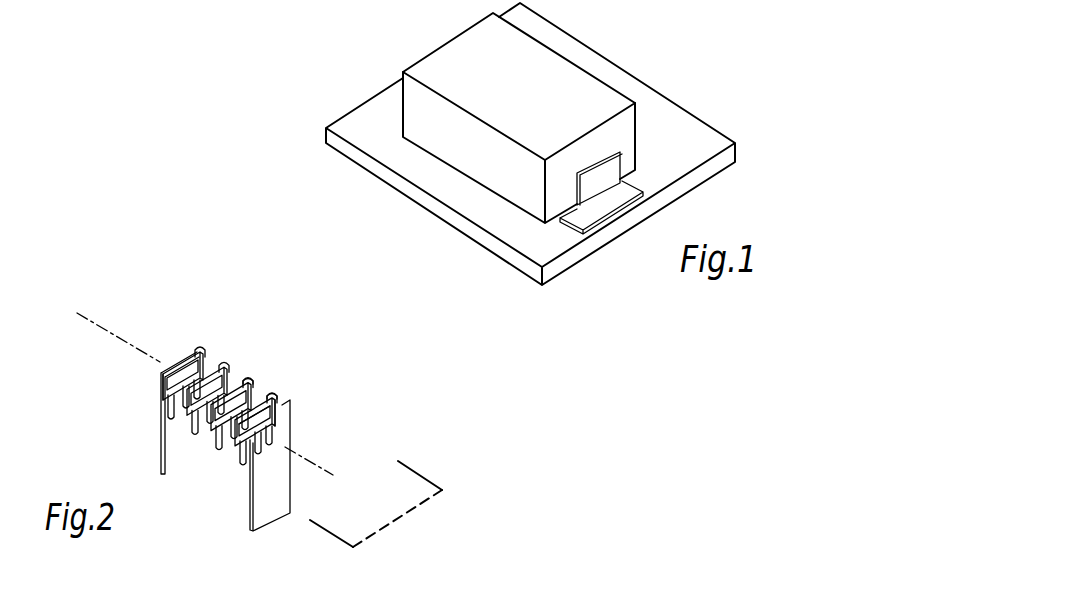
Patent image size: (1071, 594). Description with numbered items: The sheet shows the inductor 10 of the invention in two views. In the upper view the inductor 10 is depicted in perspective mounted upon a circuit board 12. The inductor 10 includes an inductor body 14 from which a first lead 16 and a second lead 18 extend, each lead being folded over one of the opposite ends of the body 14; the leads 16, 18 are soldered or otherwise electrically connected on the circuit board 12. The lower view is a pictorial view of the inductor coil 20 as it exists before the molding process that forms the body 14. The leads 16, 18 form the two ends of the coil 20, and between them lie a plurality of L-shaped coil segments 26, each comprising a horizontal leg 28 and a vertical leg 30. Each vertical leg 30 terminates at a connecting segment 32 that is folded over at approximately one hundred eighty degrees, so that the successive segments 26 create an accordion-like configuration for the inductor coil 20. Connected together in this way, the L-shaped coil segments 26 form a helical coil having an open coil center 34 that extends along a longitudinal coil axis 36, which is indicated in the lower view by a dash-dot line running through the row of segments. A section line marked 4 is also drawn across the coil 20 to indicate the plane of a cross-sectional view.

In FIG. 1, the inductor 10 is at (496, 115).
In FIG. 1, the circuit board 12 is at (682, 120).
In FIG. 1, the inductor body 14 is at (572, 62).
In FIG. 1, the first lead 16 is at (607, 165).
In FIG. 2, the first lead 16 is at (258, 531).
In FIG. 2, the second lead 18 is at (166, 474).
In FIG. 2, the inductor coil 20 is at (205, 340).
In FIG. 2, the L-shaped coil segments 26 is at (225, 453).
In FIG. 2, the horizontal leg 28 is at (222, 362).
In FIG. 2, the vertical leg 30 is at (186, 398).
In FIG. 2, the connecting segment 32 is at (278, 388).
In FIG. 2, the open coil center 34 is at (262, 434).
In FIG. 2, the longitudinal coil axis 36 is at (100, 326).
In FIG. 2, the section line 4- 4 is at (367, 491).